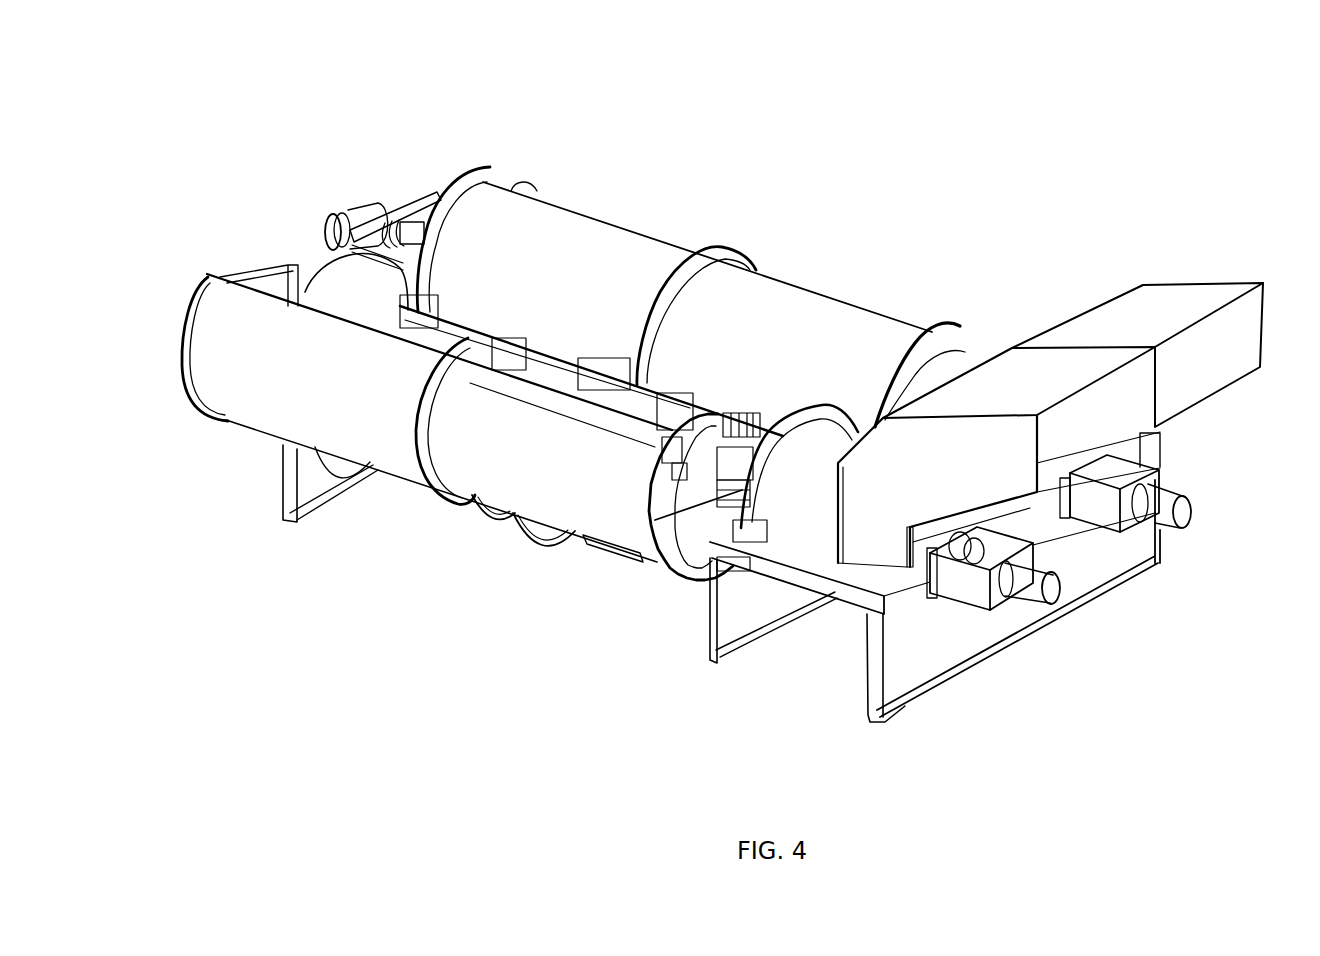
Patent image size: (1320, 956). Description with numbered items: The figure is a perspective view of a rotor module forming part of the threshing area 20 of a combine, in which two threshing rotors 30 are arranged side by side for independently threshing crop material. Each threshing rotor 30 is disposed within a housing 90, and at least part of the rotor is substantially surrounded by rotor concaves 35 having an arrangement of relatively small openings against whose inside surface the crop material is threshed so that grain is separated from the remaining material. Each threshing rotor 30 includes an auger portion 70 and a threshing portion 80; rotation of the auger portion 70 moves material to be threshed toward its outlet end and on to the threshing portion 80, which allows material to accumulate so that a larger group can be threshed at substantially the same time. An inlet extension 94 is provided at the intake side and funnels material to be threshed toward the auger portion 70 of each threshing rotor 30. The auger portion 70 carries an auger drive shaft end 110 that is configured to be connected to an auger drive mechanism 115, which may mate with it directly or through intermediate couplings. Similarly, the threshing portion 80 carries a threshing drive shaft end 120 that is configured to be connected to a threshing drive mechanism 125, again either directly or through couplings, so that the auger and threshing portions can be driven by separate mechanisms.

The threshing area 20 is at (1162, 132).
The threshing rotor 30 is at (440, 550).
The rotor concaves 35 is at (390, 478).
The auger portion 70 is at (813, 530).
The threshing portion 80 is at (707, 468).
The housing 90 is at (795, 300).
The inlet extension 94 is at (1135, 303).
The auger drive shaft end 110 is at (973, 557).
The auger drive mechanism 115 is at (1047, 590).
The threshing drive shaft end 120 is at (423, 232).
The threshing drive mechanism 125 is at (332, 213).